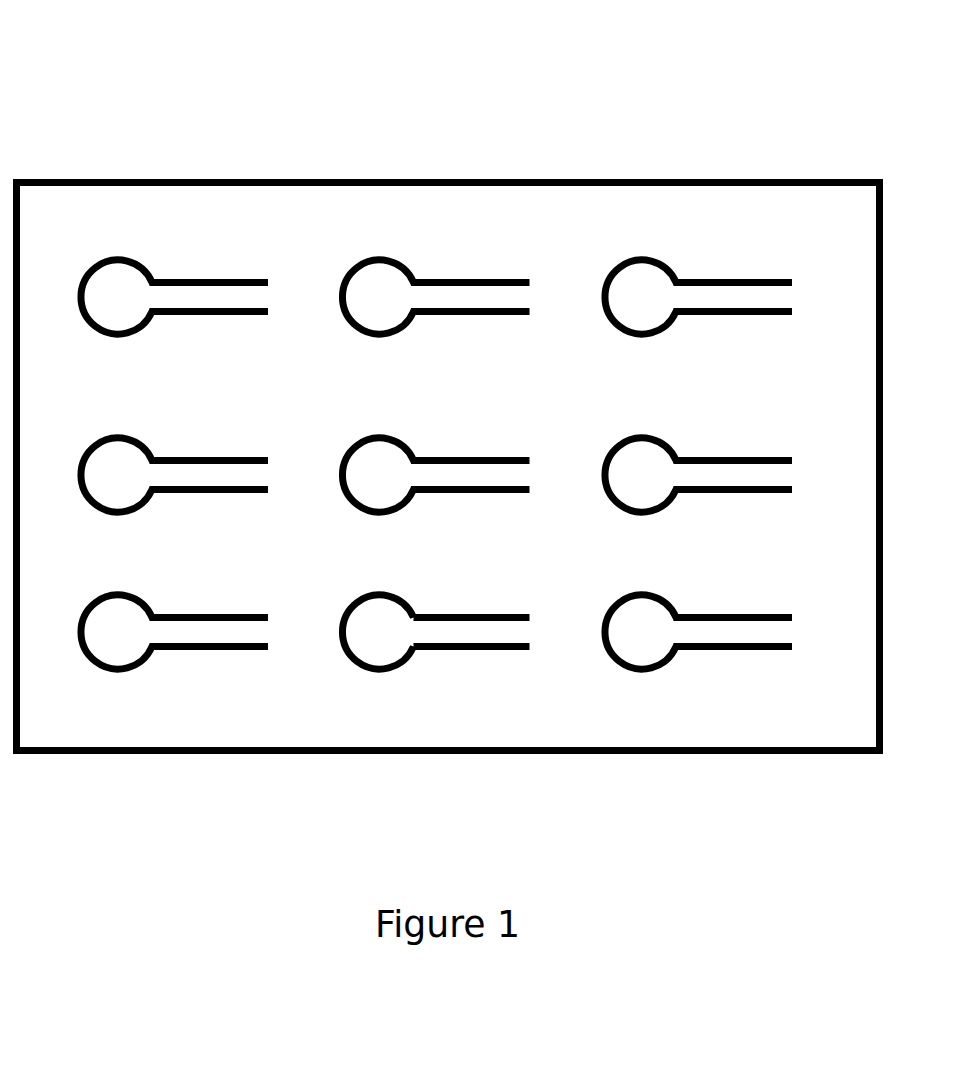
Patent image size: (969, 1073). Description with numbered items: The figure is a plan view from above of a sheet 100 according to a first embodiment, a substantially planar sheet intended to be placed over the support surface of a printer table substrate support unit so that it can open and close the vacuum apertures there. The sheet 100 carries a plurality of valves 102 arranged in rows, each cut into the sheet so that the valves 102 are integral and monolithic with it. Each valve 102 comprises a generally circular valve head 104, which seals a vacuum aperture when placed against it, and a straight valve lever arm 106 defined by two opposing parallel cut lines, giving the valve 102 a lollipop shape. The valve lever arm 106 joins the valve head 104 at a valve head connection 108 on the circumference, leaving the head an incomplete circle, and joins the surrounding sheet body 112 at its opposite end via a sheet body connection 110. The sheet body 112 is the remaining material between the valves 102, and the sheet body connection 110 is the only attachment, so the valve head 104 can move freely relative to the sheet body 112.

The sheet 100 is at (86, 96).
The valve 102 is at (332, 650).
The valve head 104 is at (382, 632).
The valve lever arm 106 is at (470, 635).
The valve head connection 108 is at (417, 633).
The sheet body connection 110 is at (527, 635).
The sheet body 112 is at (573, 577).